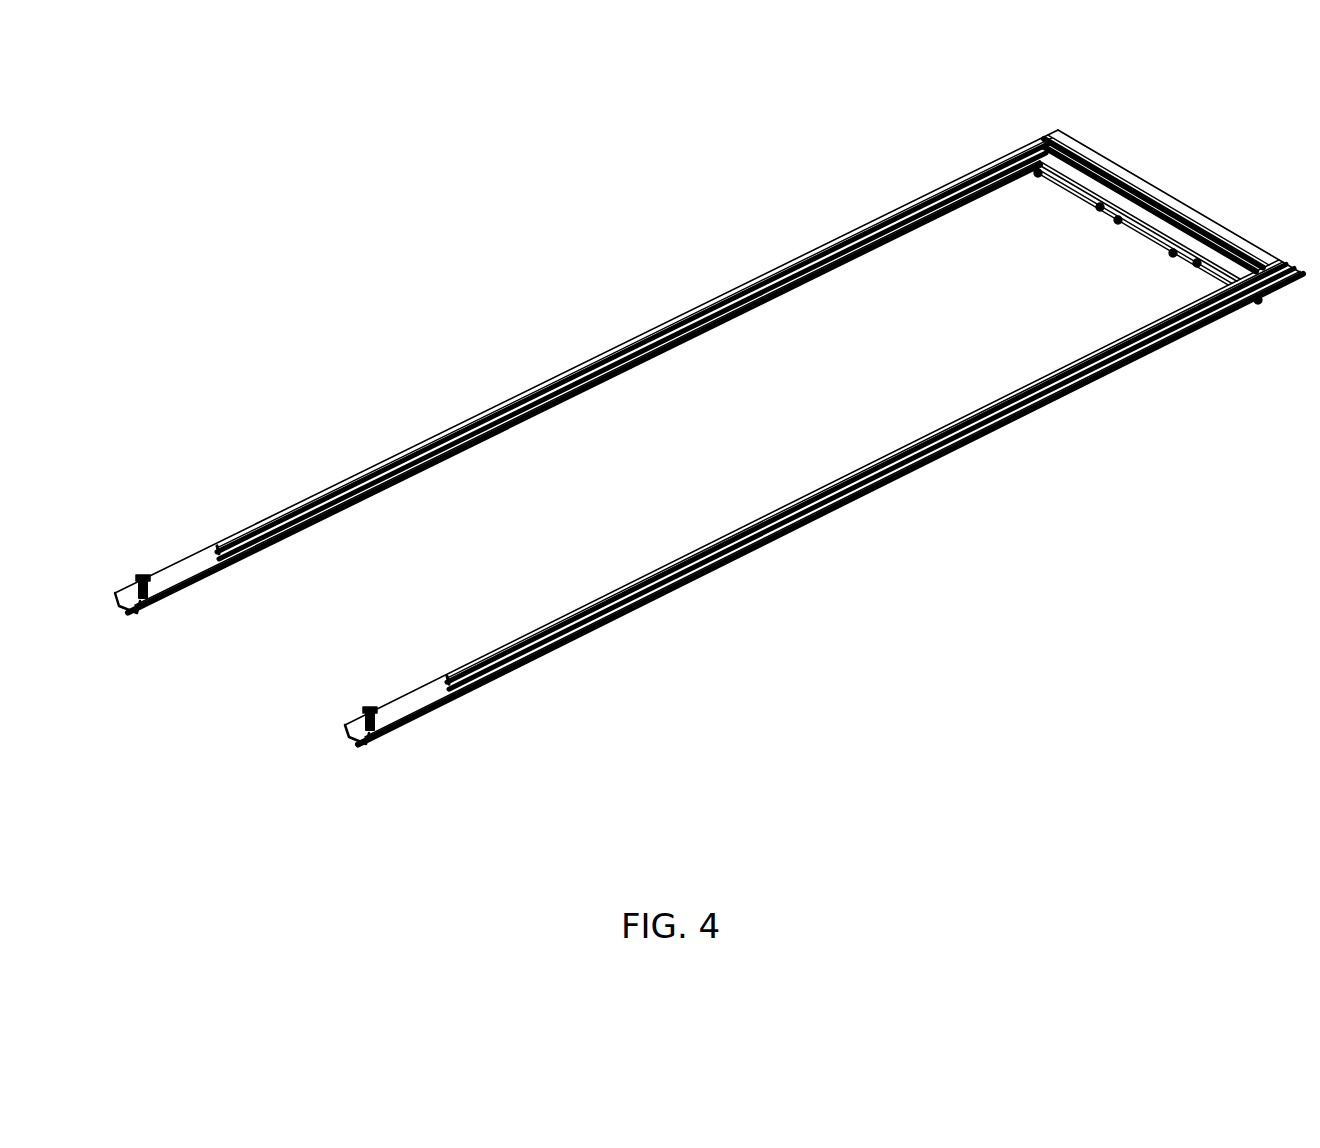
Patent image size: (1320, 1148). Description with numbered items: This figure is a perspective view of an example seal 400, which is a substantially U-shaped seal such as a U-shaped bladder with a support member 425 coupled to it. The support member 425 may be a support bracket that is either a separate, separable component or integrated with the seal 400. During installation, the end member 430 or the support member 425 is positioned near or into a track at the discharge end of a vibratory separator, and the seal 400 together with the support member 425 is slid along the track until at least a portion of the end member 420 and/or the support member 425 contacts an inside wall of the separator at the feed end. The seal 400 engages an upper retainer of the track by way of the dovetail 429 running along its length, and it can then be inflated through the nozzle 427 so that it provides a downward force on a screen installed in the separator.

The seal 400 is at (363, 176).
The end member 420 is at (182, 572).
The support member 425 is at (1097, 190).
The nozzle 427 is at (142, 578).
The dovetail 429 is at (230, 533).
The end member 430 is at (1165, 192).